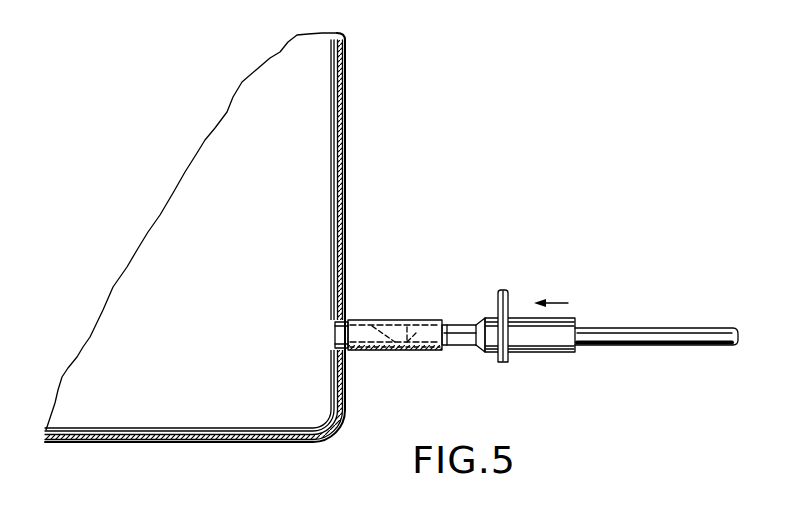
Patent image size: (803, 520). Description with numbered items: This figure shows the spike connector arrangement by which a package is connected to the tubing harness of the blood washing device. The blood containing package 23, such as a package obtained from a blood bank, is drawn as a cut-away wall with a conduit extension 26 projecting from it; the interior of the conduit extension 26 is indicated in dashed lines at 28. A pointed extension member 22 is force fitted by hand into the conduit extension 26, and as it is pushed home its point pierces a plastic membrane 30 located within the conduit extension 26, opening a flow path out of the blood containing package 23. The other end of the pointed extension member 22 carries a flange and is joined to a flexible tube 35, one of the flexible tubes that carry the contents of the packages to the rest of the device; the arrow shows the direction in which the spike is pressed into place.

The blood containing package 23 is at (333, 163).
The conduit extension 26 is at (363, 318).
The bore 28 is at (382, 355).
The plastic membrane 30 is at (427, 318).
The pointed extension member 22 is at (462, 330).
The flexible tube 35 is at (642, 332).